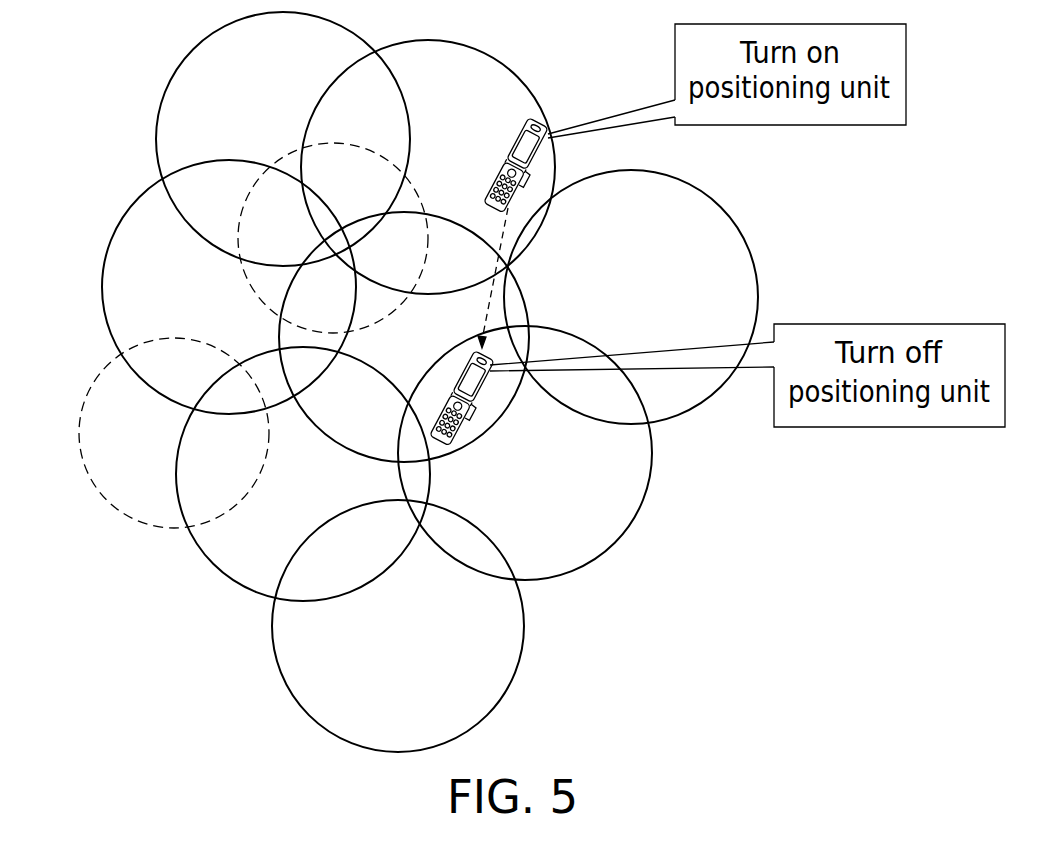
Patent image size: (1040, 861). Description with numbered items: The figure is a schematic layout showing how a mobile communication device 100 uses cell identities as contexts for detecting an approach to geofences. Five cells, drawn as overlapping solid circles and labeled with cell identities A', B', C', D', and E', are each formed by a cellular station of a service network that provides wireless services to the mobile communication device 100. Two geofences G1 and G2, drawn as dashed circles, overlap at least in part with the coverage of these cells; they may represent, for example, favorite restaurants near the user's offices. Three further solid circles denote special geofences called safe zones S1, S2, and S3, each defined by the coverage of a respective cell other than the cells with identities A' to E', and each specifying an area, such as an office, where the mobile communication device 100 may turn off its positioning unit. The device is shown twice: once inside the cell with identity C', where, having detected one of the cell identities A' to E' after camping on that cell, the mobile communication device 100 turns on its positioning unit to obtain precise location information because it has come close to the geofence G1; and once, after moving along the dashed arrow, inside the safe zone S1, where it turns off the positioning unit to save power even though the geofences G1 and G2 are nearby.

The cell identity A' is at (198, 287).
The cell identity B' is at (264, 139).
The cell identity C' is at (432, 150).
The cell identity D' is at (404, 303).
The cell identity E' is at (303, 498).
The geofence G1 is at (290, 152).
The geofence G2 is at (125, 520).
The safe zone S1 is at (620, 538).
The safe zone S2 is at (507, 692).
The safe zone S3 is at (713, 190).
The mobile communication device 100 is at (540, 117).